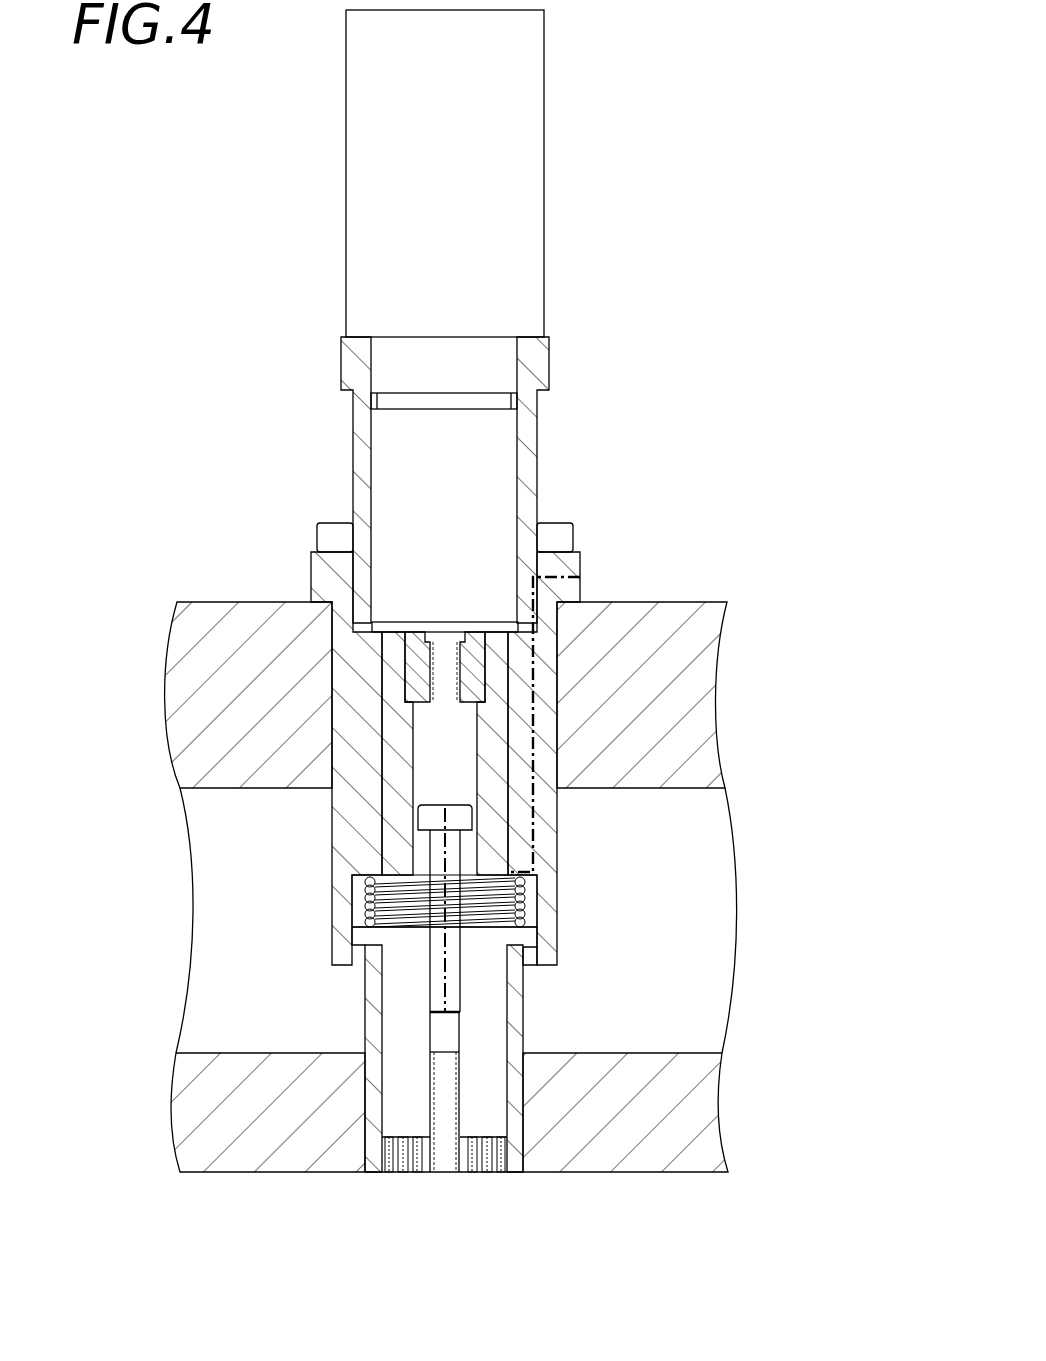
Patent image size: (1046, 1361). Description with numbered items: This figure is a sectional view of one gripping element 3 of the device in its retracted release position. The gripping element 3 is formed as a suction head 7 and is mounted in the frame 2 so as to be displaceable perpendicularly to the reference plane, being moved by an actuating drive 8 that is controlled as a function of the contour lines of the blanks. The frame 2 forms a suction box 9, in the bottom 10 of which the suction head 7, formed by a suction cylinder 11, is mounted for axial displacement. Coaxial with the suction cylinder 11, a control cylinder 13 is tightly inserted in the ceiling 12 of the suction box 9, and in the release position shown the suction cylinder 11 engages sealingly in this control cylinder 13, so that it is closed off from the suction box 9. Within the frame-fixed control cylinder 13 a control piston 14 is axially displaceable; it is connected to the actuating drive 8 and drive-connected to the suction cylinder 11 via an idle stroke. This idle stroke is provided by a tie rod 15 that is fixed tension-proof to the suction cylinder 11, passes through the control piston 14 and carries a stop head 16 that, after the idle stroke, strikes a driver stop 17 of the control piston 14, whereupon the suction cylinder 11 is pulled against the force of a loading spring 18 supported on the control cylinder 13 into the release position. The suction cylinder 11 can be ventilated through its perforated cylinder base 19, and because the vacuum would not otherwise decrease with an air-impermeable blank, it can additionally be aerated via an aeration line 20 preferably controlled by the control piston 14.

The frame 2 is at (149, 694).
The gripping element 3 is at (586, 1022).
The suction head 7 is at (368, 1202).
The actuating drive 8 is at (512, 165).
The suction box 9 is at (200, 975).
The bottom 10 is at (645, 1130).
The suction cylinder 11 is at (372, 1082).
The ceiling 12 is at (200, 643).
The control cylinder 13 is at (545, 807).
The control piston 14 is at (398, 847).
The tie rod 15 is at (433, 980).
The stop head 16 is at (437, 818).
The driver stop 17 is at (462, 827).
The loading spring 18 is at (372, 897).
The perforated cylinder base 19 is at (478, 1172).
The aeration line 20 is at (548, 577).